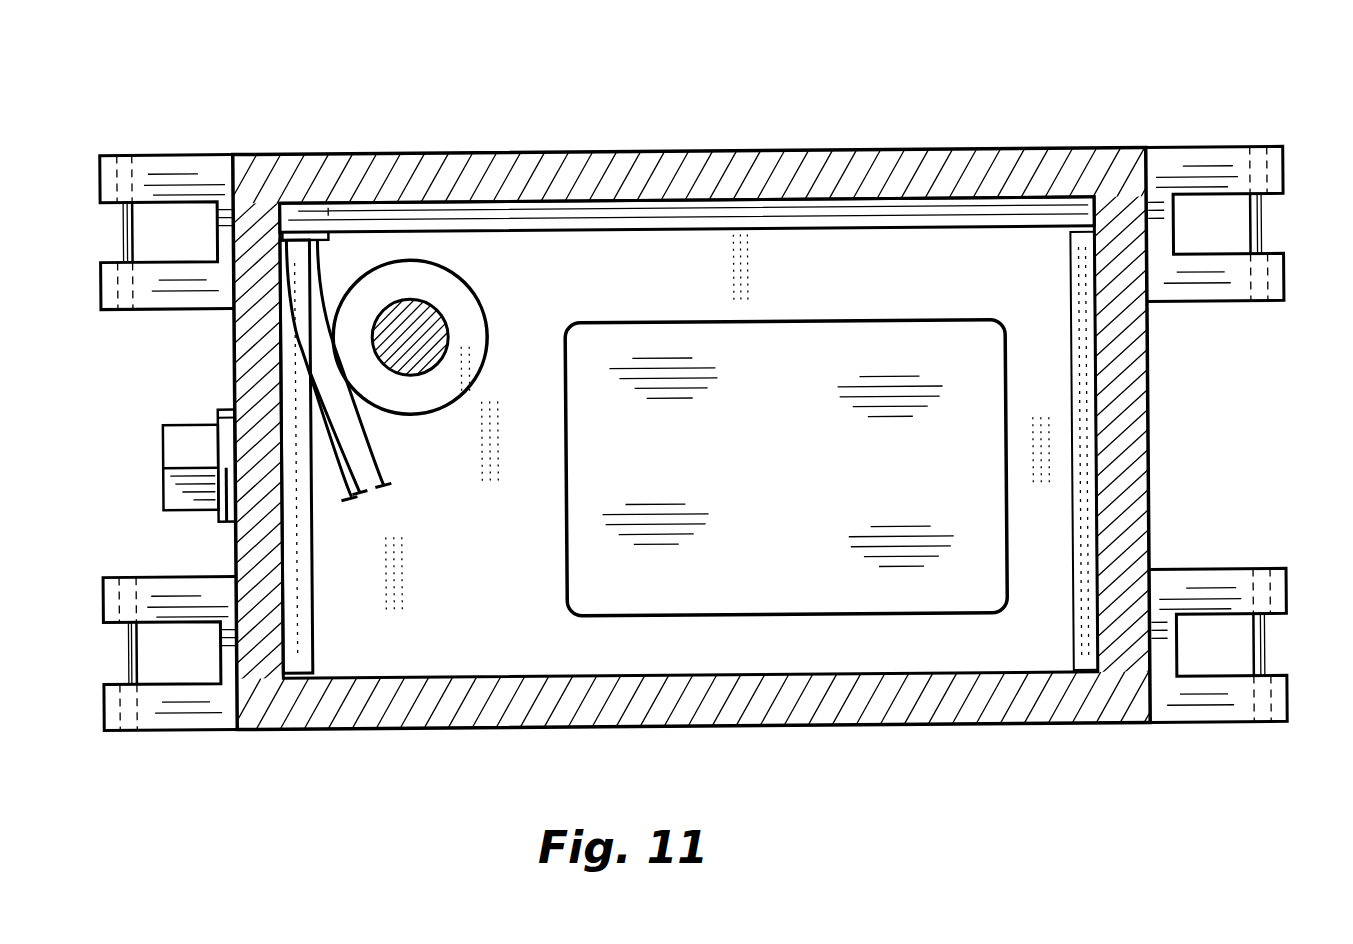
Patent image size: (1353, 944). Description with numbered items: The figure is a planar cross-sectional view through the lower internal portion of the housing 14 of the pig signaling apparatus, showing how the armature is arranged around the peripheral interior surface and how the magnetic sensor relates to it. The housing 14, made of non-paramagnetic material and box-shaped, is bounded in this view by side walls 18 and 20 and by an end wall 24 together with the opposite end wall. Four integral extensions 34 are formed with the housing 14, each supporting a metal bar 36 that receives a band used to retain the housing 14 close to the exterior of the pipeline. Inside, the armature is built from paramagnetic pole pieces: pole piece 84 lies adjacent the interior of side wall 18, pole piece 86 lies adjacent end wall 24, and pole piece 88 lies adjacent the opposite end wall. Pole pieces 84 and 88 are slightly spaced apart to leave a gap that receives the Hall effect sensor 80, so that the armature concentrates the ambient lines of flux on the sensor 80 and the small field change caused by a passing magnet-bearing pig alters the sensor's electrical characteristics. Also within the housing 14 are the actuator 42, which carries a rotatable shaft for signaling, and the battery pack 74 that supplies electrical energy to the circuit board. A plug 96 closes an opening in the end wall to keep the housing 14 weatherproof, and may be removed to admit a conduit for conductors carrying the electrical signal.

The housing 14 is at (984, 127).
The side wall 18 is at (787, 171).
The side wall 20 is at (758, 690).
The end wall 24 is at (1118, 340).
The integral extensions 34 is at (145, 161).
The metal bar 36 is at (127, 228).
The actuator 42 is at (463, 303).
The battery pack 74 is at (811, 356).
The Hall effect sensor 80 is at (282, 202).
The pole piece 84 is at (590, 211).
The pole piece 86 is at (1083, 418).
The pole piece 88 is at (295, 417).
The plug 96 is at (170, 486).